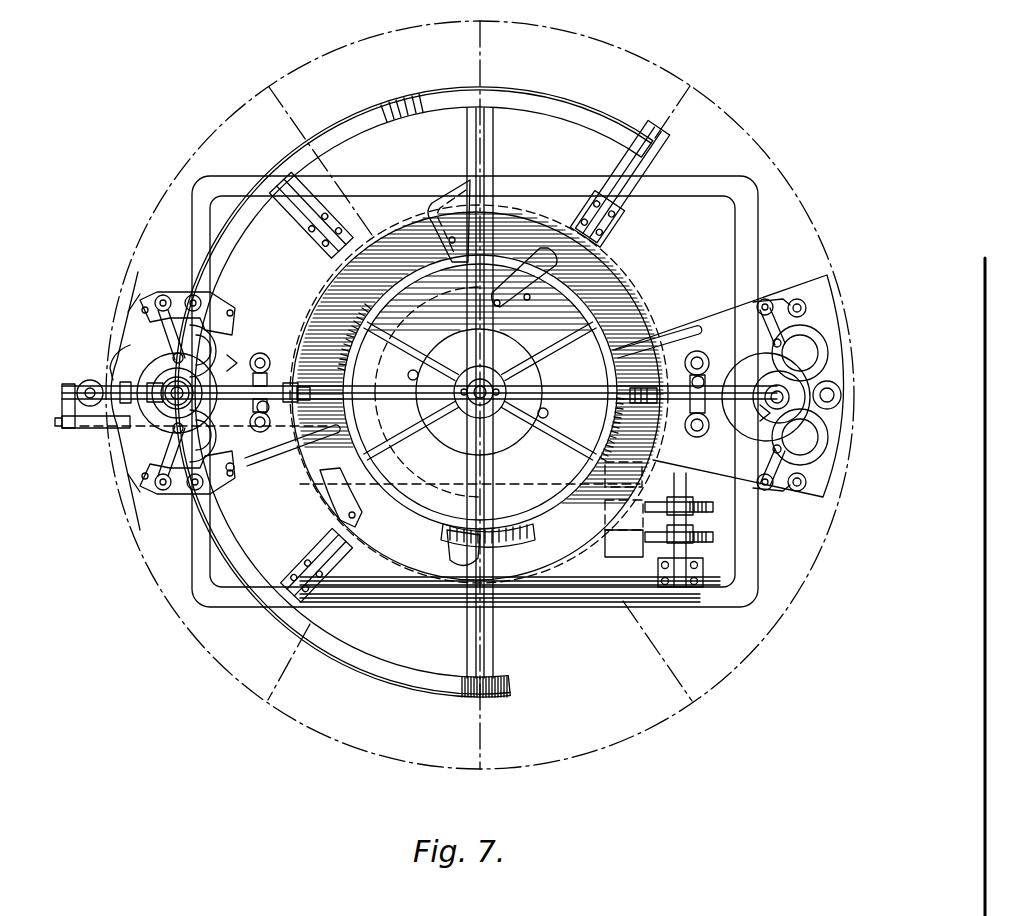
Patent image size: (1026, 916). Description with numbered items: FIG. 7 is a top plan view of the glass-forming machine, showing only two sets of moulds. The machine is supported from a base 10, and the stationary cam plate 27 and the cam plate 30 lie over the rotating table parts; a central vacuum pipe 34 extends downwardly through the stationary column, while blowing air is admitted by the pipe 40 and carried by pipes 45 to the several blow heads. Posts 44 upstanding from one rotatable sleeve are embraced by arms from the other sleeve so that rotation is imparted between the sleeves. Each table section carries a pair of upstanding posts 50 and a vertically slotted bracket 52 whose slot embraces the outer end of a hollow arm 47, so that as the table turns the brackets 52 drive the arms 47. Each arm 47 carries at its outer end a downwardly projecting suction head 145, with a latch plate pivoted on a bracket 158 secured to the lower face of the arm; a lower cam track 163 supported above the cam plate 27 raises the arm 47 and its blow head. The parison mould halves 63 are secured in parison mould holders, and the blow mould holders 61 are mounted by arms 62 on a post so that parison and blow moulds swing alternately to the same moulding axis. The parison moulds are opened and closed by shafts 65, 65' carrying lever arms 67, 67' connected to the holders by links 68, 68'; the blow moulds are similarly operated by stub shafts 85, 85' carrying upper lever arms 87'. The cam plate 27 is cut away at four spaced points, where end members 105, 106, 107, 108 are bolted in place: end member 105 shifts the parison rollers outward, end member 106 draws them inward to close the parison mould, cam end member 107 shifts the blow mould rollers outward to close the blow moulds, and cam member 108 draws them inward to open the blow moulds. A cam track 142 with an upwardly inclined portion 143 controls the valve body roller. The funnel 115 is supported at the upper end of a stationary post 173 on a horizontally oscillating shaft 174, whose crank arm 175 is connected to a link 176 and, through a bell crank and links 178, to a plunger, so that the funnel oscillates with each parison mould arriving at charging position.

The base 10 is at (688, 208).
The cam plate 27 is at (616, 278).
The cam plate 30 is at (557, 443).
The central vacuum pipe 34 is at (482, 383).
The pipe 40 is at (475, 420).
The posts 44 is at (415, 375).
The pipes 45 is at (653, 333).
The hollow arm 47 is at (643, 405).
The upstanding posts 50 is at (260, 358).
The vertically slotted bracket 52 is at (695, 432).
The blow mould holder 61 is at (762, 378).
The arms 62 is at (527, 513).
The parison mould half 63 is at (162, 400).
The shaft 65 is at (169, 299).
The shaft 65' is at (149, 493).
The lever arm 67 is at (149, 283).
The lever arm 67' is at (151, 504).
The link 68 is at (152, 336).
The link 68' is at (176, 436).
The stub shaft 85 is at (158, 417).
The stub shaft 85' is at (201, 295).
The lever arm 87' is at (204, 396).
The end member 105 is at (443, 178).
The end member 106 is at (313, 527).
The cam end member 107 is at (515, 268).
The cam member 108 is at (455, 548).
The funnel 115 is at (175, 415).
The cam track 142 is at (277, 613).
The upwardly inclined portion 143 is at (395, 100).
The suction head 145 is at (227, 363).
The bracket 158 is at (263, 417).
The lower cam track 163 is at (417, 490).
The stationary post 173 is at (93, 382).
The horizontally oscillating shaft 174 is at (130, 353).
The crank arm 175 is at (63, 387).
The link 176 is at (58, 430).
The link 178 is at (167, 403).